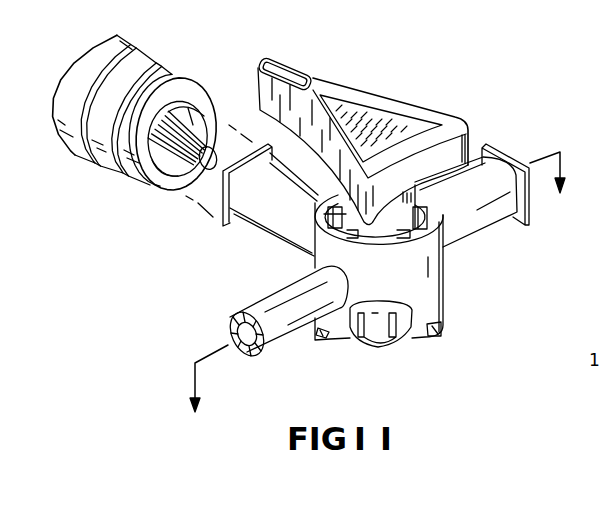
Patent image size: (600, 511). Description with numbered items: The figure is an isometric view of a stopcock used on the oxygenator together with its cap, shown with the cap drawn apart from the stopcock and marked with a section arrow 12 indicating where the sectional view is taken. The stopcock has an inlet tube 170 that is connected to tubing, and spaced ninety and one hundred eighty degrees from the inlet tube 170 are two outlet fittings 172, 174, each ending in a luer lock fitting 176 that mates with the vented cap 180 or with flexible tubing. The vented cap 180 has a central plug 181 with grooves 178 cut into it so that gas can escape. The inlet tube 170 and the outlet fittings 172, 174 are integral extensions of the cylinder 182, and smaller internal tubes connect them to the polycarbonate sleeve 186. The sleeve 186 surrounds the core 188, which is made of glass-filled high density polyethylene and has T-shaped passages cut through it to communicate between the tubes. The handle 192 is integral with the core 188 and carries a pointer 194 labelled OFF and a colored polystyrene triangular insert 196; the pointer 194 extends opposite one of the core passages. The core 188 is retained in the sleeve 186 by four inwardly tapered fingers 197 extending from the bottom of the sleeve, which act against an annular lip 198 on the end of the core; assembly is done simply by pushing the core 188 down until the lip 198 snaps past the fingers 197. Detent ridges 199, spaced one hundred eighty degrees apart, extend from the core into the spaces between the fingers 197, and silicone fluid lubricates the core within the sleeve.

The inlet tube 170 is at (260, 298).
The outlet fitting 172 is at (258, 225).
The outlet fitting 174 is at (491, 228).
The luer lock fitting 176 is at (222, 226).
The grooves 178 is at (185, 175).
The vented cap 180 is at (113, 176).
The central plug 181 is at (217, 152).
The cylinder 182 is at (445, 287).
The sleeve 186 is at (322, 218).
The core 188 is at (453, 222).
The handle 192 is at (422, 115).
The pointer 194 is at (302, 70).
The triangular insert 196 is at (344, 116).
The inwardly tapered fingers 197 is at (340, 340).
The annular lip 198 is at (375, 341).
The detent ridges 199 is at (364, 339).
The section line for FIG. 12 is at (381, 299).